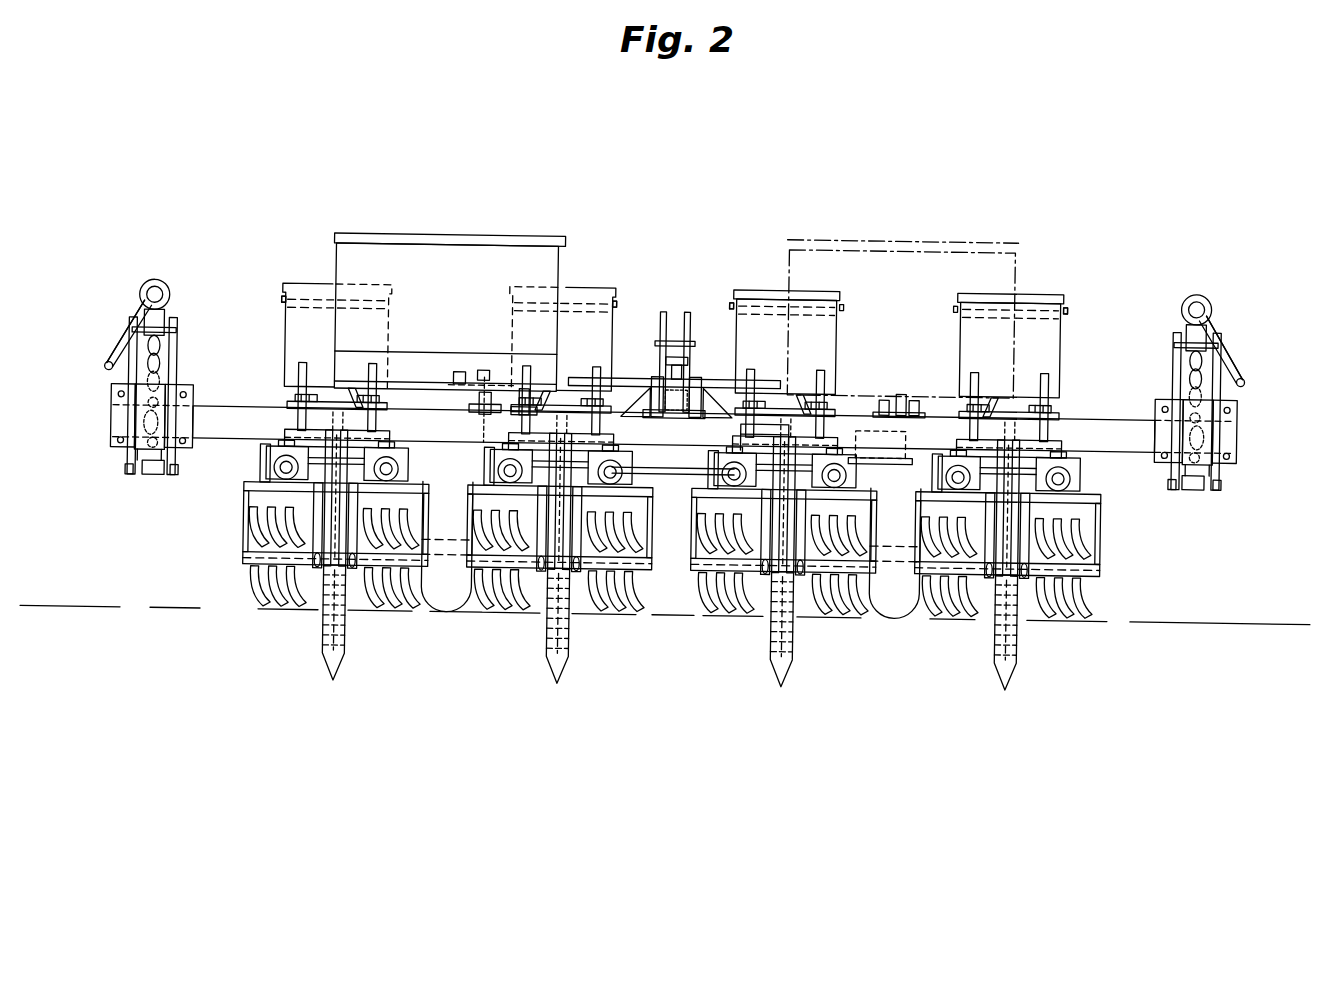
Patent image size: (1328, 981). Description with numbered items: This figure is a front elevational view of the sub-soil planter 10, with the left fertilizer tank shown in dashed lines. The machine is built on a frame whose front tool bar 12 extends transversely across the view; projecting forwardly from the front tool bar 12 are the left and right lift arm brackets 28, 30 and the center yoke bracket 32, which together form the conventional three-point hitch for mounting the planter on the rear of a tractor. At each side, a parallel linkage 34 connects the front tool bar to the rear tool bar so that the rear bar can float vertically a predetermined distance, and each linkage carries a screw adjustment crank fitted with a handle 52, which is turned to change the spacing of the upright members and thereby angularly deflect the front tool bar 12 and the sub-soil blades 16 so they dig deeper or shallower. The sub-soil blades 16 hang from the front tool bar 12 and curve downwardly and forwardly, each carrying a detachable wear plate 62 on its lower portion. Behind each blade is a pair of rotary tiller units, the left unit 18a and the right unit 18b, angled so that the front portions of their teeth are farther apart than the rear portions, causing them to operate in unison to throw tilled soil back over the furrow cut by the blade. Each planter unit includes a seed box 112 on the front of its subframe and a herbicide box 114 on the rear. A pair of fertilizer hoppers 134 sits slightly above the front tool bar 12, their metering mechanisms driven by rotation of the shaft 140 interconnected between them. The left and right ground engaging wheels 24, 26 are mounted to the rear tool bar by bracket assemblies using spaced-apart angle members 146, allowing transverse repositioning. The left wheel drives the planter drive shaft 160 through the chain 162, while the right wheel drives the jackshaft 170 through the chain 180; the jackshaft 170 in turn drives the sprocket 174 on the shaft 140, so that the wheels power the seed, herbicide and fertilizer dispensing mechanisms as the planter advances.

The sub-soil planter 10 is at (1080, 163).
The front tool bar 12 is at (258, 407).
The sub-soil blades 16 is at (318, 662).
The left rotary tiller unit 18a is at (392, 617).
The right rotary tiller unit 18b is at (290, 616).
The left ground engaging wheel 24 is at (901, 553).
The right ground engaging wheel 26 is at (451, 546).
The left lift arm bracket 28 is at (757, 446).
The right lift arm bracket 30 is at (548, 412).
The center yoke bracket 32 is at (665, 336).
The parallel linkage 34 is at (96, 331).
The handle 52 is at (104, 370).
The wear plate 62 is at (346, 657).
The seed box 112 is at (320, 284).
The herbicide box 114 is at (283, 300).
The fertilizer hoppers 134 is at (488, 234).
The shaft 140 is at (616, 375).
The angle members 146 is at (917, 378).
The planter drive shaft 160 is at (692, 468).
The chain 162 is at (851, 429).
The jackshaft 170 is at (500, 366).
The sprocket 174 is at (686, 358).
The chain 180 is at (485, 412).